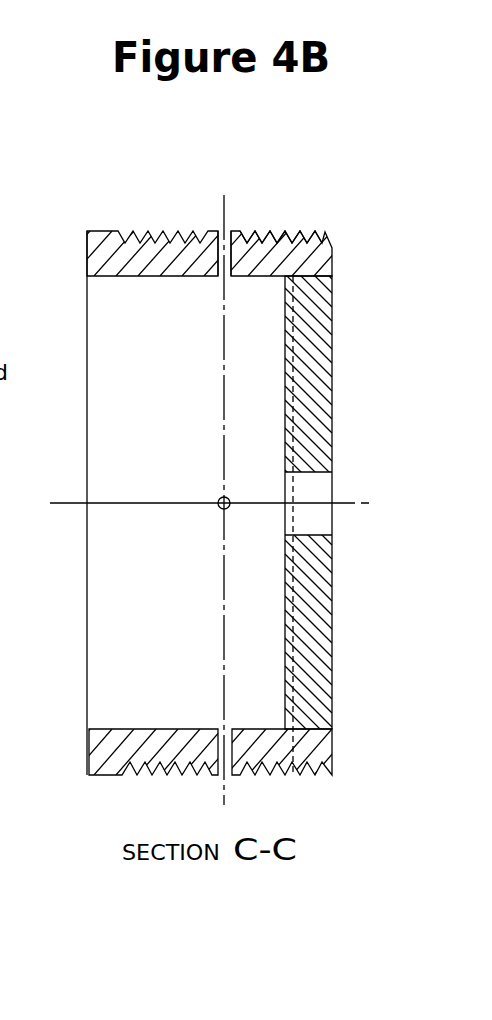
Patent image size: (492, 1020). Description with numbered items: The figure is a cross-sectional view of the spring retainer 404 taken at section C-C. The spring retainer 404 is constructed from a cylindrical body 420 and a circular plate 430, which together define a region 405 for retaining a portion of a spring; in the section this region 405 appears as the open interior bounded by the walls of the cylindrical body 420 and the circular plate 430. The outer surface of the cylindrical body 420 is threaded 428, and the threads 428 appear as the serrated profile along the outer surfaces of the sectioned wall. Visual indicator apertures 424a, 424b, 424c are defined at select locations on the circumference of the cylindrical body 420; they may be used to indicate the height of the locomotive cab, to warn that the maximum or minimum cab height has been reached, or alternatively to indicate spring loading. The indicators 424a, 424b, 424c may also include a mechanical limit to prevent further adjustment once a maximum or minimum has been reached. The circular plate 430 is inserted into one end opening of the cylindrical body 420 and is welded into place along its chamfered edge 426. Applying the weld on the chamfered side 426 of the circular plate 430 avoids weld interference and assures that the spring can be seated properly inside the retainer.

The spring retainer 404 is at (105, 797).
The region 405 is at (120, 600).
The cylindrical body 420 is at (95, 236).
The visual indicator aperture 424a is at (221, 236).
The visual indicator aperture 424b is at (230, 510).
The visual indicator aperture 424c is at (232, 750).
The chamfered edge 426 is at (304, 395).
The threads 428 is at (298, 228).
The circular plate 430 is at (369, 503).